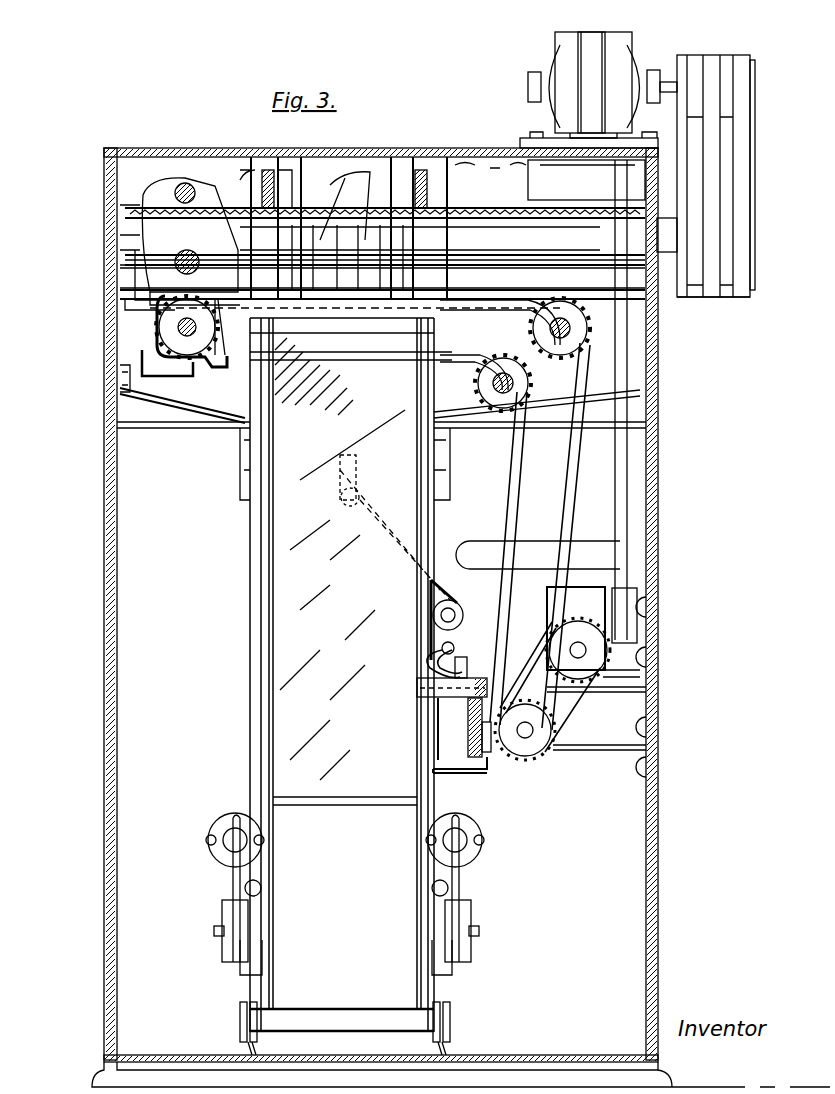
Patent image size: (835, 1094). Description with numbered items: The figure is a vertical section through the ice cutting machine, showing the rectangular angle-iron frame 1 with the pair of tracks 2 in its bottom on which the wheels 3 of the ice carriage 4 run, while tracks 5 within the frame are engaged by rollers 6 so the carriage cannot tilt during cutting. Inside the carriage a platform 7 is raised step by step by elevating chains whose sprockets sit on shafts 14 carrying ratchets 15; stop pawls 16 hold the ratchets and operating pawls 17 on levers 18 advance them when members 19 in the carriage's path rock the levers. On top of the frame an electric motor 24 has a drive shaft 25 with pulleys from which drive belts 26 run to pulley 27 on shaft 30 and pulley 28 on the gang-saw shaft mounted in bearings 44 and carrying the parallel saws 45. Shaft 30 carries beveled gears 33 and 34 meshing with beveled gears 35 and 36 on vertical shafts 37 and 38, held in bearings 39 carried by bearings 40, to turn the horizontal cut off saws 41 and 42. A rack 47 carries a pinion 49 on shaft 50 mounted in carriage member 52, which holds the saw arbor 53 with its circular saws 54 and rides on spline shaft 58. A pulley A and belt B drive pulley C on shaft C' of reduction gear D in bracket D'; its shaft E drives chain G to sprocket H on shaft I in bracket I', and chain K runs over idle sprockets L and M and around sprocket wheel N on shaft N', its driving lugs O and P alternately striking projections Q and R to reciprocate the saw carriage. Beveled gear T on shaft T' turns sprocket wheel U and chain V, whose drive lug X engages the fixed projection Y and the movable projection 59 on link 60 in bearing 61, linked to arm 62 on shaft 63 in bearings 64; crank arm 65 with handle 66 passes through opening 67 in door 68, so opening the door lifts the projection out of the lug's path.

The frame 1 is at (446, 617).
The tracks 2 is at (246, 1050).
The wheels 3 is at (238, 1010).
The ice carriage 4 is at (270, 580).
The tracks 5 is at (243, 432).
The rollers 6 is at (244, 462).
The platform 7 is at (340, 800).
The shafts 14 is at (215, 931).
The ratchets 15 is at (250, 968).
The stop pawls 16 is at (214, 950).
The operating pawls 17 is at (222, 906).
The levers 18 is at (232, 872).
The members 19 is at (212, 838).
The electric motor 24 is at (552, 60).
The drive shaft 25 is at (667, 82).
The drive belts 26 is at (720, 70).
The pulley 27 is at (767, 175).
The pulley 28 is at (733, 293).
The shaft 30 is at (586, 180).
The beveled gear 33 is at (420, 235).
The beveled gear 34 is at (268, 170).
The beveled gear 35 is at (490, 180).
The beveled gear 36 is at (334, 228).
The shaft 37 is at (470, 238).
The shaft 38 is at (180, 241).
The bearings 39 is at (360, 240).
The bearings 40 is at (280, 228).
The cut off saw 41 is at (500, 345).
The cut off saw 42 is at (232, 327).
The bearings 44 is at (190, 186).
The saws 45 is at (420, 203).
The rack 47 is at (385, 244).
The pinion 49 is at (175, 193).
The shaft 50 is at (140, 224).
The carriage member 52 is at (150, 262).
The saw arbor 53 is at (178, 262).
The circular saws 54 is at (150, 292).
The spline shaft 58 is at (560, 316).
The movable projection 59 is at (468, 706).
The link 60 is at (430, 668).
The bearing 61 is at (420, 690).
The arm 62 is at (442, 650).
The shaft 63 is at (438, 620).
The bearings 64 is at (440, 605).
The crank arm 65 is at (350, 525).
The handle 66 is at (340, 497).
The opening 67 is at (327, 462).
The door 68 is at (255, 541).
The pulley A is at (655, 300).
The drive belt B is at (568, 333).
The pulley C is at (663, 614).
The shaft C' is at (585, 400).
The reduction gear D is at (593, 632).
The bracket D' is at (679, 687).
The shaft E is at (590, 648).
The drive chain G is at (552, 640).
The sprocket H is at (540, 745).
The shaft I is at (518, 761).
The bracket I' is at (662, 774).
The drive sprocket chain K is at (520, 490).
The idle sprocket L is at (492, 384).
The idle sprocket M is at (578, 338).
The sprocket wheel N is at (101, 343).
The shaft N' is at (137, 331).
The driving lug O is at (218, 370).
The driving lug P is at (596, 704).
The projection Q is at (145, 297).
The projection R is at (150, 378).
The beveled gear T is at (636, 701).
The shaft T' is at (424, 741).
The sprocket wheel U is at (482, 730).
The drive sprocket chain V is at (430, 790).
The drive lug X is at (473, 662).
The fixed projection Y is at (480, 760).